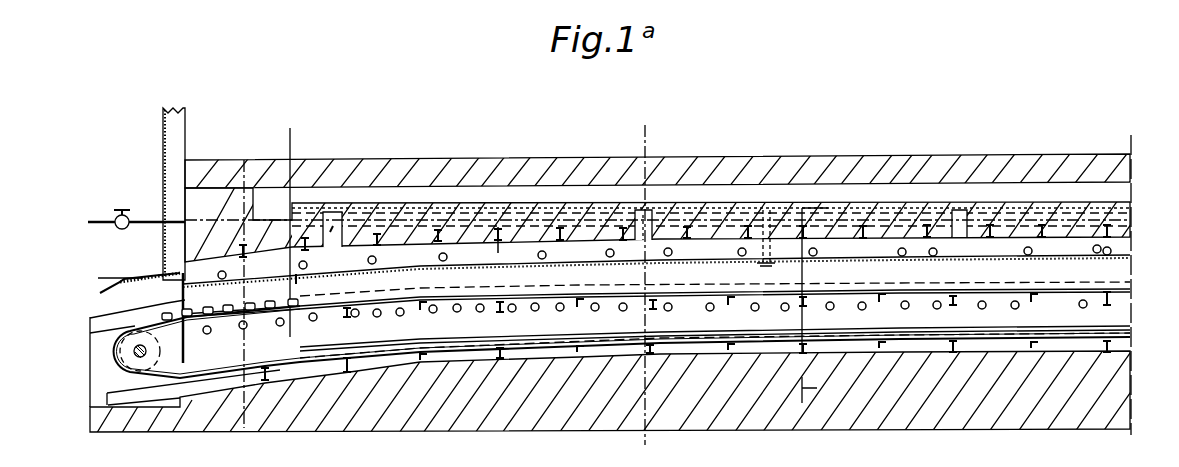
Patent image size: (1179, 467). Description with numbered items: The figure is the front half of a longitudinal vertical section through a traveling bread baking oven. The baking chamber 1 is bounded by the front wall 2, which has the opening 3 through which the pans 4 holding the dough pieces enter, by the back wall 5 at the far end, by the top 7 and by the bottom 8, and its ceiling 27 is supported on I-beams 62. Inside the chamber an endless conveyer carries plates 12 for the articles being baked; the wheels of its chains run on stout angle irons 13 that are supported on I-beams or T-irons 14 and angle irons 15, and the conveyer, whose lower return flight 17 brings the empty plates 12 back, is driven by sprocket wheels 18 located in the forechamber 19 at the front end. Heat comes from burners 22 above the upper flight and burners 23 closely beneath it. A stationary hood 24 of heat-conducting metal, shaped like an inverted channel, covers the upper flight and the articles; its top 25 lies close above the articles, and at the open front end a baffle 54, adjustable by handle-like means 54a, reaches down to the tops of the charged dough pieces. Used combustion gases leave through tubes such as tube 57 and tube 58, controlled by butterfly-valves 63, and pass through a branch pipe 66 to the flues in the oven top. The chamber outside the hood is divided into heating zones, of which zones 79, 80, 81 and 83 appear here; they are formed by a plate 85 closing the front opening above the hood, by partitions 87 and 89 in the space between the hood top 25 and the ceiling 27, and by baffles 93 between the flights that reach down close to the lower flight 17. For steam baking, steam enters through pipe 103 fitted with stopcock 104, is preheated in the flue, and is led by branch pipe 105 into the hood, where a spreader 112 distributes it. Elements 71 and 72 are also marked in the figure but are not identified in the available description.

The baking chamber 1 is at (656, 275).
The front wall 2 is at (192, 242).
The opening 3 is at (90, 318).
The pans 4 is at (50, 339).
The back wall 5 is at (290, 133).
The top 7 is at (837, 157).
The bottom 8 is at (563, 423).
The plates 12 is at (268, 368).
The angle irons 13 is at (688, 305).
The I-beams or T-irons 14 is at (343, 320).
The angle irons 15 is at (433, 326).
The lower flight 17 is at (853, 315).
The sprocket wheels 18 is at (130, 360).
The forechamber 19 is at (88, 352).
The burners 22 is at (546, 256).
The burners 23 is at (537, 310).
The hood 24 is at (656, 291).
The top of hood 25 is at (637, 263).
The ceiling 27 is at (594, 253).
The baffle 54 is at (100, 293).
The handle-like means 54a is at (150, 283).
The tube 57 is at (643, 242).
The tube 58 is at (943, 228).
The I-beams 62 is at (449, 254).
The butterfly-valves 63 is at (958, 223).
The branch pipe 66 is at (1130, 208).
The hood 71 is at (257, 213).
The gap 72 is at (539, 198).
The heating zone 79 is at (664, 292).
The heating zone 80 is at (629, 326).
The heating zone 81 is at (931, 295).
The heating zone 83 is at (1123, 245).
The plate 85 is at (106, 278).
The partition 87 is at (502, 250).
The partition 89 is at (817, 250).
The baffles 93 is at (186, 357).
The pipe 103 is at (90, 224).
The stopcock 104 is at (118, 228).
The branch pipe 105 is at (656, 272).
The spreader 112 is at (299, 280).